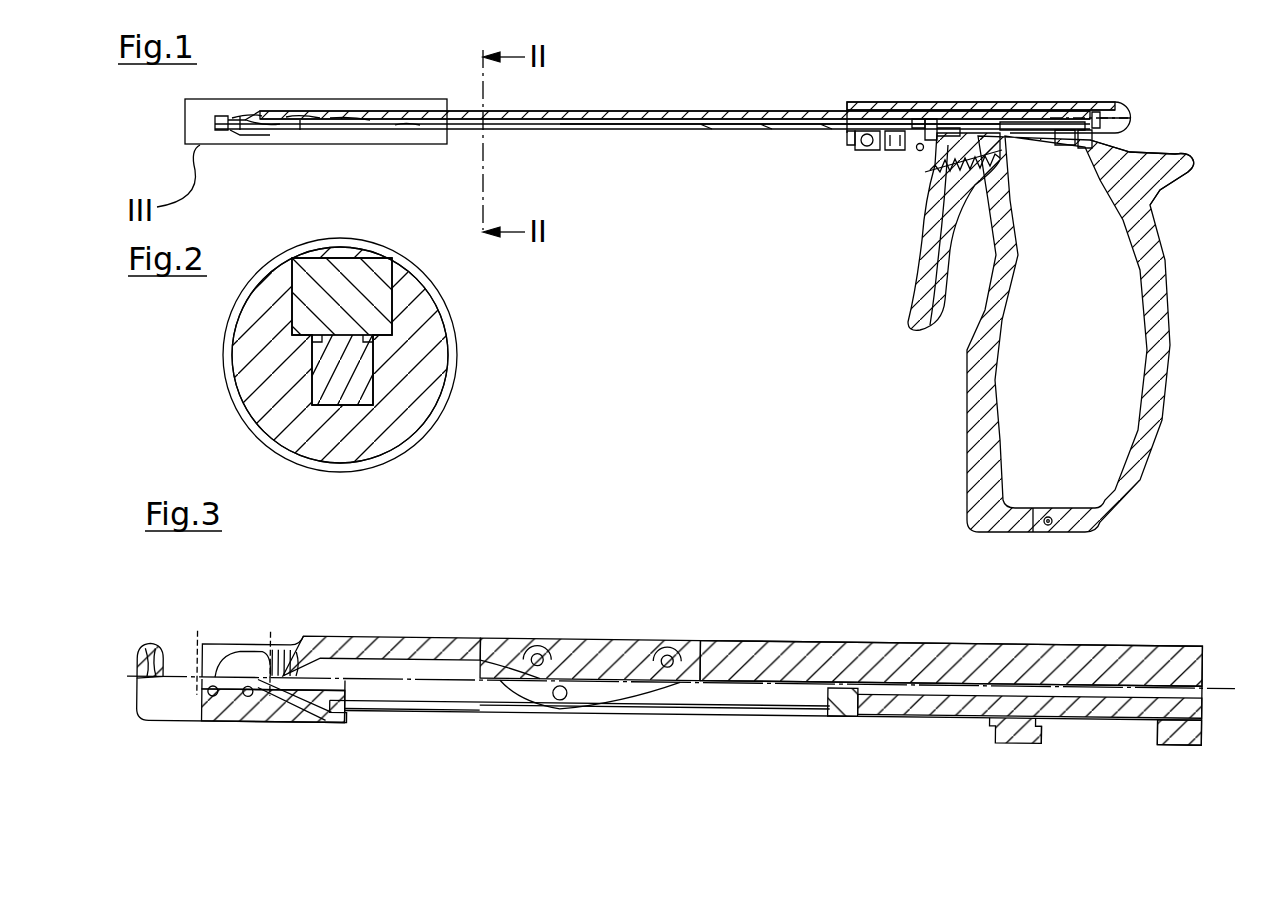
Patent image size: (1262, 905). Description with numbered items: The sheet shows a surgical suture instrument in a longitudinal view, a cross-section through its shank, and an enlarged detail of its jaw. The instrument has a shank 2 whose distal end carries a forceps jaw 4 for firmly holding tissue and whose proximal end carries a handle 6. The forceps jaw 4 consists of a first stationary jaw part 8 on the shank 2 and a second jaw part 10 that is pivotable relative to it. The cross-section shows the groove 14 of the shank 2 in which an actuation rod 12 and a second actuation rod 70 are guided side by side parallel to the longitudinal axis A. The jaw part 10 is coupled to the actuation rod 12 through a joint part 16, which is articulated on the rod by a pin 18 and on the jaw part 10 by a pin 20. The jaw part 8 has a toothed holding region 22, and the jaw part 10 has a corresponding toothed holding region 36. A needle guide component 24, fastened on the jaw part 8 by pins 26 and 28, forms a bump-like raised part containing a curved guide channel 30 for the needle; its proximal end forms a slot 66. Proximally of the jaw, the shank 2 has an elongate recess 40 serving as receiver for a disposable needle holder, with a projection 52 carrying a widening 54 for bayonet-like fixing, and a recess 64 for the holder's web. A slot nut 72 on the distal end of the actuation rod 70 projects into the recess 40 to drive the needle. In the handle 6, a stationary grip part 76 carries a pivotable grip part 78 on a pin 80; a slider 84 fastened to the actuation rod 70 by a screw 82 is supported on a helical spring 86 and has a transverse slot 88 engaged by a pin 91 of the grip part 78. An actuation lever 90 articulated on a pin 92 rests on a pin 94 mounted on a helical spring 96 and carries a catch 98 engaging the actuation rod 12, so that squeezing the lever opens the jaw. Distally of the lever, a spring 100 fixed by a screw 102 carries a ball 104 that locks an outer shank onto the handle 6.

In FIG. 1, the shank 2 is at (698, 130).
In FIG. 2, the shank 2 is at (433, 365).
In FIG. 3, the shank 2 is at (1175, 728).
In FIG. 1, the forceps jaw 4 is at (228, 132).
In FIG. 3, the forceps jaw 4 is at (143, 718).
In FIG. 1, the handle 6 is at (966, 421).
In FIG. 3, the first stationary jaw part 8 is at (183, 712).
In FIG. 3, the second jaw part 10 is at (344, 649).
In FIG. 1, the actuation rod 12 is at (733, 111).
In FIG. 2, the actuation rod 12 is at (383, 274).
In FIG. 3, the actuation rod 12 is at (757, 652).
In FIG. 2, the groove 14 is at (393, 311).
In FIG. 3, the joint part 16 is at (617, 653).
In FIG. 3, the pin 18 is at (667, 653).
In FIG. 3, the pin 20 is at (537, 653).
In FIG. 3, the holding region 22 is at (140, 650).
In FIG. 3, the needle guide component 24 is at (232, 667).
In FIG. 3, the pin 26 is at (212, 696).
In FIG. 3, the pin 28 is at (247, 698).
In FIG. 3, the guide channel 30 is at (268, 706).
In FIG. 3, the holding region 36 is at (293, 656).
In FIG. 3, the recess 40 is at (757, 713).
In FIG. 3, the projection 52 is at (990, 718).
In FIG. 3, the widening 54 is at (1040, 730).
In FIG. 3, the recess 64 is at (427, 709).
In FIG. 3, the slot 66 is at (348, 714).
In FIG. 1, the actuation rod 70 is at (748, 129).
In FIG. 2, the actuation rod 70 is at (360, 385).
In FIG. 3, the actuation rod 70 is at (923, 699).
In FIG. 3, the slot nut 72 is at (830, 712).
In FIG. 1, the first grip part 76 is at (985, 383).
In FIG. 1, the pivotable grip part 78 is at (1190, 153).
In FIG. 1, the pin 80 is at (1048, 515).
In FIG. 1, the screw 82 is at (1063, 134).
In FIG. 1, the slider 84 is at (1081, 111).
In FIG. 1, the helical spring 86 is at (1017, 120).
In FIG. 1, the slot 88 is at (1084, 141).
In FIG. 1, the actuation lever 90 is at (933, 270).
In FIG. 1, the pin 91 is at (1094, 130).
In FIG. 1, the pin 92 is at (930, 140).
In FIG. 1, the pin 94 is at (953, 185).
In FIG. 1, the helical spring 96 is at (990, 167).
In FIG. 1, the catch 98 is at (918, 116).
In FIG. 1, the spring 100 is at (858, 150).
In FIG. 1, the screw 102 is at (893, 145).
In FIG. 1, the ball 104 is at (853, 137).
In FIG. 1, the longitudinal axis A is at (1130, 118).
In FIG. 3, the longitudinal axis A is at (1213, 681).